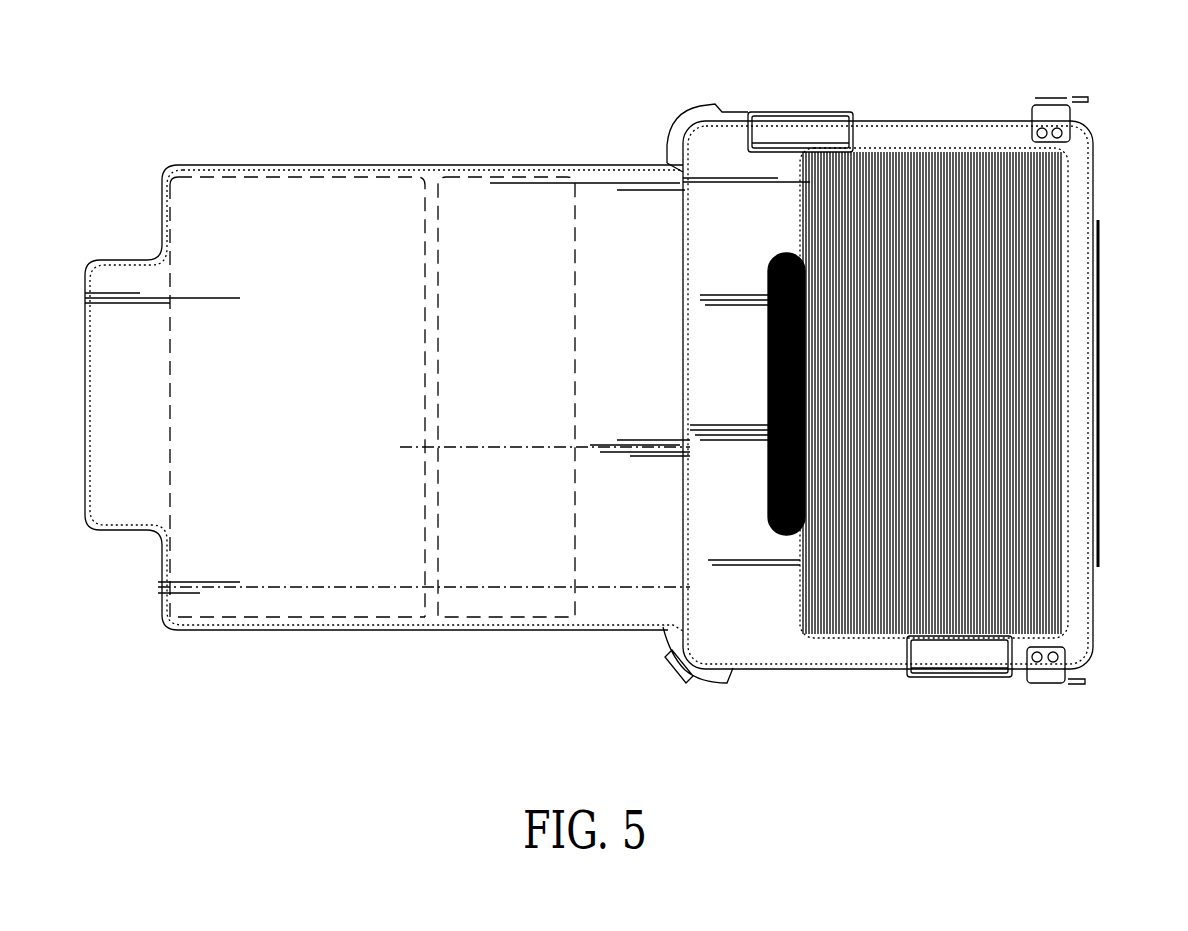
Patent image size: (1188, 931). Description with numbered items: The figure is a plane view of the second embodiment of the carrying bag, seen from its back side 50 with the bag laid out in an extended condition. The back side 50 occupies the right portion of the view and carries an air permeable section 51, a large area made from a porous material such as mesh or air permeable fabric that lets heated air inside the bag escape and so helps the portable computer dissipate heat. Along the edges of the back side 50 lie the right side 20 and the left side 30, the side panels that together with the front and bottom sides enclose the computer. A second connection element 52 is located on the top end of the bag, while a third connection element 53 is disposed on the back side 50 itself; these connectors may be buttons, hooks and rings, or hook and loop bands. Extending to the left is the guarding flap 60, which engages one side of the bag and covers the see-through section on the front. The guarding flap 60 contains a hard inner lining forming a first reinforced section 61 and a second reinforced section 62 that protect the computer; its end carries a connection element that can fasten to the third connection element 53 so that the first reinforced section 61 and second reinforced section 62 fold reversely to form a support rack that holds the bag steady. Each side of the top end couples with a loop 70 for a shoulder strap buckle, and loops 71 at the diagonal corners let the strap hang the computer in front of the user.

The right side 20 is at (788, 115).
The left side 30 is at (958, 655).
The back side 50 is at (850, 660).
The air permeable section 51 is at (1042, 448).
The second connection element 52 is at (1103, 365).
The third connection element 53 is at (770, 375).
The guarding flap 60 is at (248, 630).
The first reinforced section 61 is at (497, 242).
The second reinforced section 62 is at (268, 242).
The loop 70 is at (1080, 97).
The loops 71 is at (1032, 98).